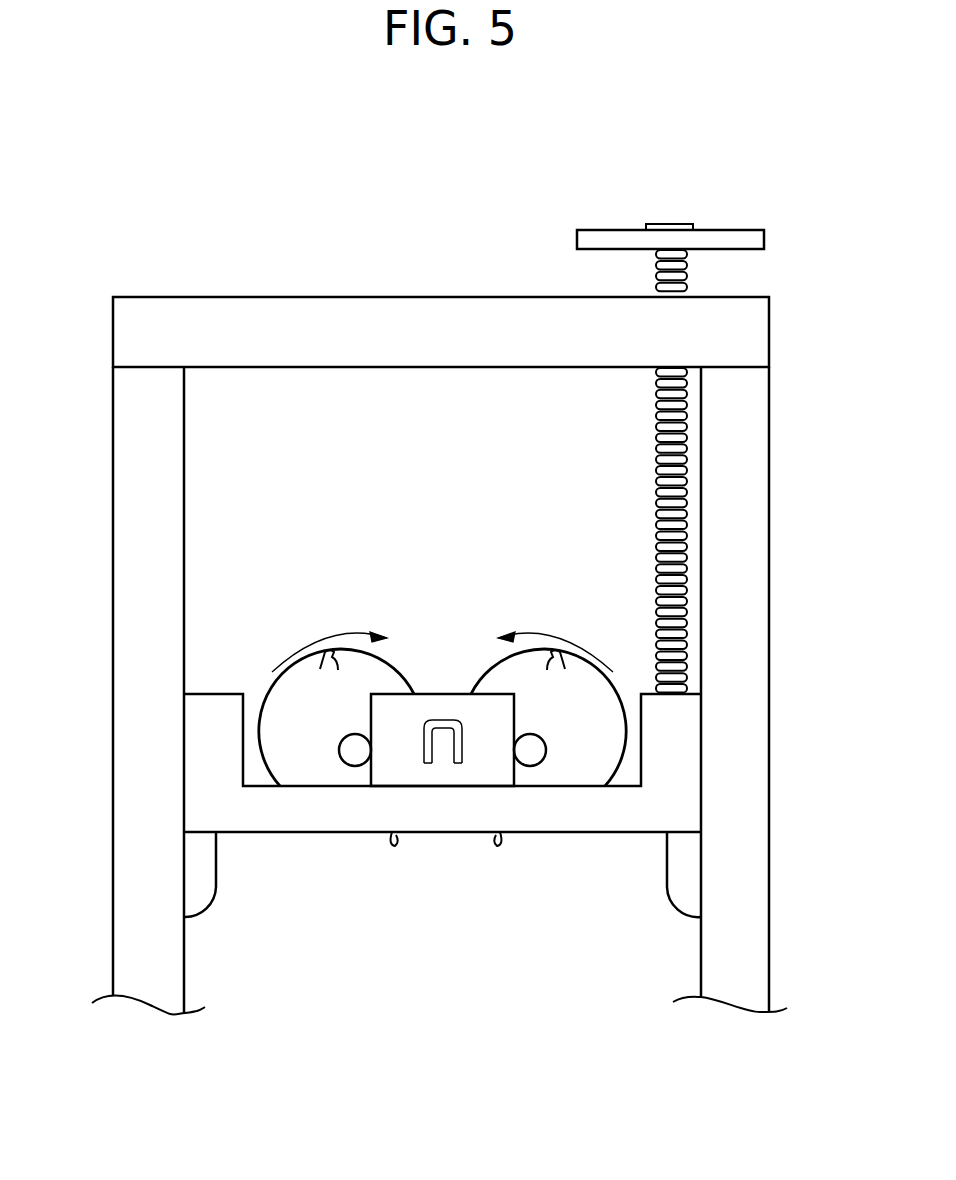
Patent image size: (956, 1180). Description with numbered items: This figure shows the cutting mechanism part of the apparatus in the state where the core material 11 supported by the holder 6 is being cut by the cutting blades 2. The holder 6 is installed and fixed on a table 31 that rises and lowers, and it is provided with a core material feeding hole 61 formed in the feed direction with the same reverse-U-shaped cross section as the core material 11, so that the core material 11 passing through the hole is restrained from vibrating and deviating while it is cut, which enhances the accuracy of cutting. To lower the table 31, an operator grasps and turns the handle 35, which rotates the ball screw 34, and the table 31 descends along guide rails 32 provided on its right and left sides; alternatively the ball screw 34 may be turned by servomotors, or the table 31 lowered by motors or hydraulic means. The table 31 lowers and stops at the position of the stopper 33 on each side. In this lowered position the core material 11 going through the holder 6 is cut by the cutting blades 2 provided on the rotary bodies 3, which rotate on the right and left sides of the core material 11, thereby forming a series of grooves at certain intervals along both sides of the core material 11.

The cutting blade 2 is at (322, 657).
The rotary body 3 is at (283, 730).
The holder 6 is at (420, 777).
The core material 11 is at (442, 719).
The table 31 is at (683, 773).
The guide rail 32 is at (113, 597).
The stopper 33 is at (200, 895).
The ball screw 34 is at (656, 430).
The handle 35 is at (735, 229).
The core material feeding hole 61 is at (427, 719).